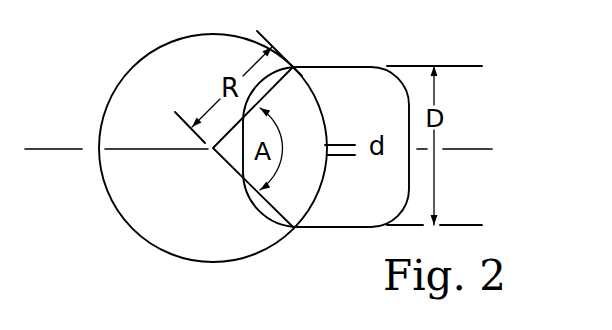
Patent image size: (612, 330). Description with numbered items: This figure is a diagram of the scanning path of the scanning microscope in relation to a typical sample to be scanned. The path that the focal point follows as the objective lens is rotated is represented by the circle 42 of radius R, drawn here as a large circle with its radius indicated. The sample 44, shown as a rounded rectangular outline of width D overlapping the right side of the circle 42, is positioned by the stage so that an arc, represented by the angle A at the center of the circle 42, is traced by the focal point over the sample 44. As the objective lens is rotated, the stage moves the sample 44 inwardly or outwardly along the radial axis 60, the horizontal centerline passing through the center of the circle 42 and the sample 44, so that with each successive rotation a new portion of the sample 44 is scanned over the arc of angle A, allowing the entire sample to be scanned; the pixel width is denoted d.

The circle 42 is at (128, 227).
The sample 44 is at (355, 212).
The radial axis 60 is at (467, 149).